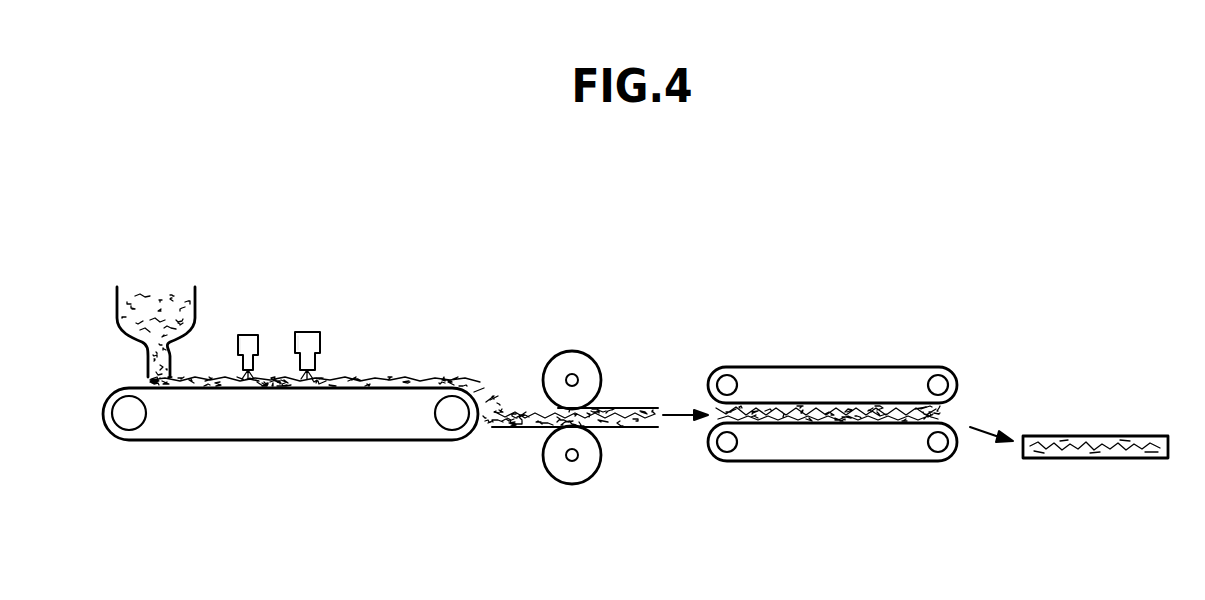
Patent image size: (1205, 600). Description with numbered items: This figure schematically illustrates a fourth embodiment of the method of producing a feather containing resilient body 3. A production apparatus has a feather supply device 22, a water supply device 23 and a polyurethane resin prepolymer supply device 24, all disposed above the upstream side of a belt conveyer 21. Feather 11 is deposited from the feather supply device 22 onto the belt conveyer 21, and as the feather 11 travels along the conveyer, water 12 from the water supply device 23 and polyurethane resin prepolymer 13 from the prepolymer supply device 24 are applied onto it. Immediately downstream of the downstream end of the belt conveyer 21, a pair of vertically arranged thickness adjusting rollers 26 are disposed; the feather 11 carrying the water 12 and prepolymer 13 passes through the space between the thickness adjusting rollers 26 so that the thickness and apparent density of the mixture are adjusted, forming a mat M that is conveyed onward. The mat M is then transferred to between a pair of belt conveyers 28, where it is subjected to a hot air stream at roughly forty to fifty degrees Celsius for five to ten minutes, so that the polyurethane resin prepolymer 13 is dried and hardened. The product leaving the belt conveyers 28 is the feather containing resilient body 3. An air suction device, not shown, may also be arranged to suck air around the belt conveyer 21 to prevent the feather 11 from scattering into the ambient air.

The feather containing resilient body 3 is at (1086, 442).
The feather 11 is at (152, 290).
The water 12 is at (242, 334).
The polyurethane resin prepolymer 13 is at (312, 340).
The belt conveyer 21 is at (408, 441).
The feather supply device 22 is at (132, 332).
The water supply device 23 is at (258, 345).
The polyurethane resin prepolymer supply device 24 is at (320, 347).
The thickness adjusting rollers 26 is at (585, 368).
The belt conveyers 28 is at (890, 366).
The mat M is at (633, 412).